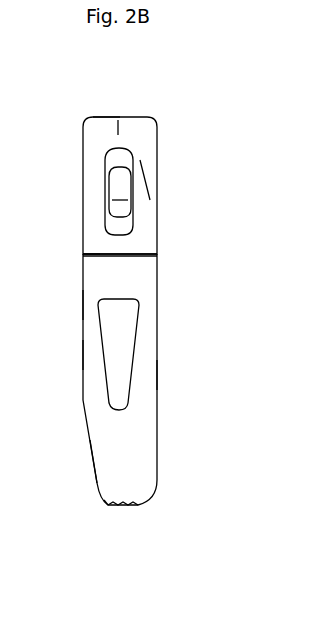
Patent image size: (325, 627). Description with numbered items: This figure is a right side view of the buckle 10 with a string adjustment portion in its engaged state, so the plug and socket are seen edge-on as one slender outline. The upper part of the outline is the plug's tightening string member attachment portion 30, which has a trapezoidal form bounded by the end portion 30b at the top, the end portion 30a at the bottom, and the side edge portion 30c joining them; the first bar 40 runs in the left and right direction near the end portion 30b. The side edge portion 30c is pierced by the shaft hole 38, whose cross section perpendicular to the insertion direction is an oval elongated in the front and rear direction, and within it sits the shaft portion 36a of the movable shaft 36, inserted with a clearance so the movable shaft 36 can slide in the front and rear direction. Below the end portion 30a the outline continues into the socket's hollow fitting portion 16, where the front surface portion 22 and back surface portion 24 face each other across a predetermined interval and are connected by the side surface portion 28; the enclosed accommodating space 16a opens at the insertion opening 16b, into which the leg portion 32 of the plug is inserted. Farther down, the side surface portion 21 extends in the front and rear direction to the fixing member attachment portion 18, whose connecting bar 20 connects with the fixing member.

The buckle with a string adjustment portion 10 is at (127, 310).
The fitting portion 16 is at (93, 407).
The accommodating space 16a is at (100, 355).
The insertion opening 16b is at (98, 258).
The fixing member attachment portion 18 is at (137, 505).
The connecting bar 20 is at (108, 505).
The side surface portion 21 is at (113, 472).
The front surface portion 22 is at (80, 302).
The back surface portion 24 is at (158, 374).
The side surface portion 28 is at (130, 277).
The tightening string member attachment portion 30 is at (97, 137).
The end portion 30a is at (103, 250).
The end portion 30b is at (97, 117).
The side edge portion 30c is at (145, 182).
The leg portion 32 is at (117, 326).
The movable shaft 36 is at (115, 190).
The shaft portion 36a is at (120, 202).
The shaft hole 38 is at (120, 157).
The first bar 40 is at (139, 117).